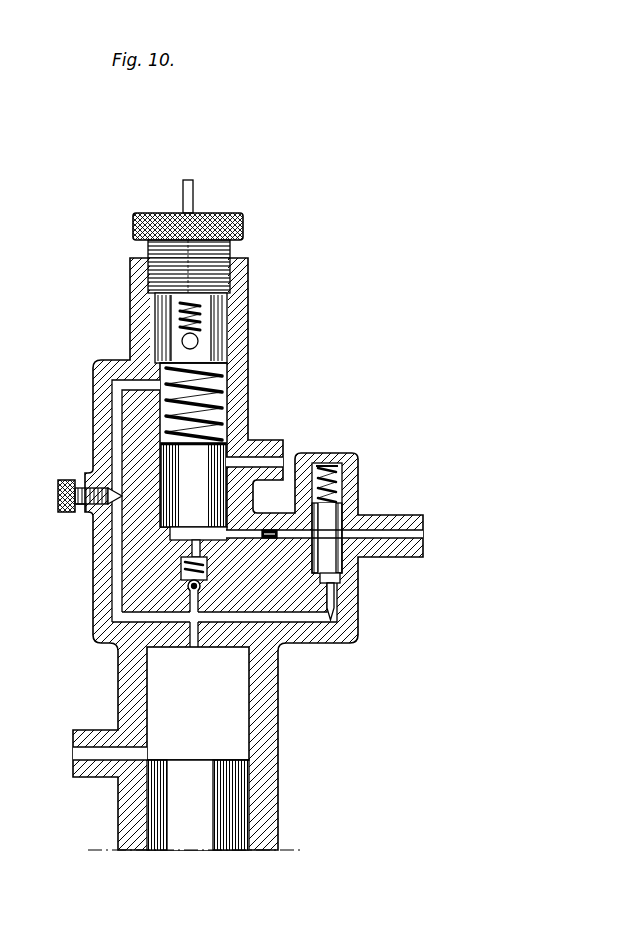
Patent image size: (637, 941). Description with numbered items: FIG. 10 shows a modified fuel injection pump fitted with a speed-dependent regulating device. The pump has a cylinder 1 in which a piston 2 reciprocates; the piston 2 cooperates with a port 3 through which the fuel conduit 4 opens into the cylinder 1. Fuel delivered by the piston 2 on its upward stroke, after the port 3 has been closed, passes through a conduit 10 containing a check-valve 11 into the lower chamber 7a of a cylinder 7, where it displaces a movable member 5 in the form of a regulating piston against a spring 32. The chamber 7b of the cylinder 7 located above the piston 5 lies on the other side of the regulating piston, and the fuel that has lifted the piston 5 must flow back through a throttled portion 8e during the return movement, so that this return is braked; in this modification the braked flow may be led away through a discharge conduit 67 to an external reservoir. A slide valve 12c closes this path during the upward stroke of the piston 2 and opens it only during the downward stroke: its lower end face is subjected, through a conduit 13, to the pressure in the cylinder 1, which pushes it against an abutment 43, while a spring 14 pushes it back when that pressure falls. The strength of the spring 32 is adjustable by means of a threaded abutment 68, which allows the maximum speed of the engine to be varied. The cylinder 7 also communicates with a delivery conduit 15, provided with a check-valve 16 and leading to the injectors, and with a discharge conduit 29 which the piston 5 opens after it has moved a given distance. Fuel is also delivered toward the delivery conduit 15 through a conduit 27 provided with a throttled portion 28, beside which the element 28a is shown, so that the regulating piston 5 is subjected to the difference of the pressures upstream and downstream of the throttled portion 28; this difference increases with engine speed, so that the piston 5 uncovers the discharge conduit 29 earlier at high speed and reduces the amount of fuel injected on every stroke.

The cylinder 1 is at (249, 710).
The piston 2 is at (232, 805).
The port 3 is at (148, 757).
The fuel conduit 4 is at (93, 752).
The movable member 5 is at (203, 453).
The cylinder 7 is at (222, 392).
The lower chamber 7a is at (190, 533).
The chamber 7b is at (112, 408).
The orifice 8e is at (270, 530).
The conduit 10 is at (195, 648).
The check-valve 11 is at (190, 586).
The needle valve 12c is at (333, 516).
The conduit 13 is at (312, 621).
The spring 14 is at (333, 487).
The delivery conduit 15 is at (194, 193).
The check-valve 16 is at (170, 336).
The conduit 27 is at (120, 578).
The throttled portion 28 is at (122, 494).
The screw seal 28a is at (80, 512).
The discharge conduit 29 is at (266, 457).
The spring 32 is at (227, 366).
The abutment 43 is at (333, 471).
The discharge conduit 67 is at (390, 537).
The threaded abutment 68 is at (205, 326).